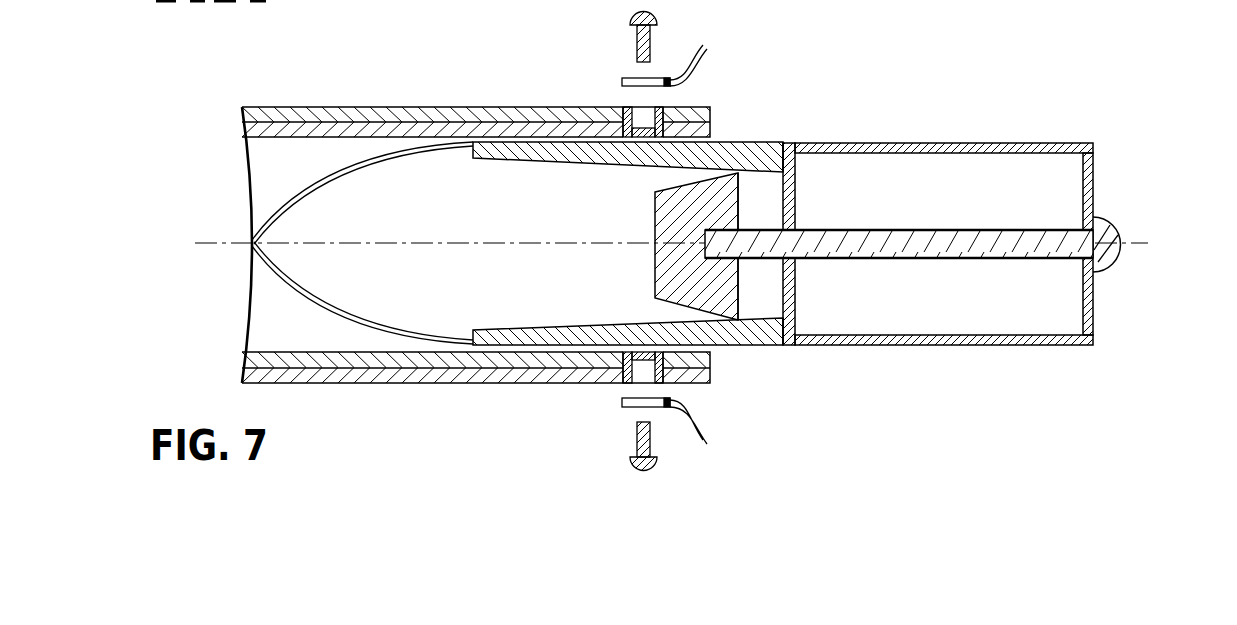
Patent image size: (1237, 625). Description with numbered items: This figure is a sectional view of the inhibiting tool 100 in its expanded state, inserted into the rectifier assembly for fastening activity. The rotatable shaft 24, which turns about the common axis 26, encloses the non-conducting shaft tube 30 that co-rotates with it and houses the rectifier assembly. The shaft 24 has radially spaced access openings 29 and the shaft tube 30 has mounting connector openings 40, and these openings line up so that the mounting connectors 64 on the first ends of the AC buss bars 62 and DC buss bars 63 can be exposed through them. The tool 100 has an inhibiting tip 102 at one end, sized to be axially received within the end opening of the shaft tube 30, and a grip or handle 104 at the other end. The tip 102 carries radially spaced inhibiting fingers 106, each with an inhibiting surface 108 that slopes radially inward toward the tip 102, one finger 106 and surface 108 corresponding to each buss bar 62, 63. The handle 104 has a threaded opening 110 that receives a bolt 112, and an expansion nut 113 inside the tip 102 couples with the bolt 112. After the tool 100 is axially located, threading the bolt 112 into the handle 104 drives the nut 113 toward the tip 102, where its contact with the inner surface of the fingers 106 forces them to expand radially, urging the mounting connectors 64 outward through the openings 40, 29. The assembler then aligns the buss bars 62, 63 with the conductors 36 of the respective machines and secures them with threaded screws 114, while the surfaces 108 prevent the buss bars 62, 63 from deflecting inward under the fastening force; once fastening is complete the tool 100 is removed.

The rotatable shaft 24 is at (476, 221).
The common axis 26 is at (225, 242).
The access openings 29 is at (620, 129).
The shaft tube 30 is at (385, 118).
The conductors 36 is at (690, 63).
The mounting connector openings 40 is at (643, 260).
The AC buss bars 62 is at (305, 192).
The DC buss bars 63 is at (307, 303).
The mounting connectors 64 is at (627, 110).
The inhibiting tool 100 is at (944, 209).
The inhibiting tip 102 is at (619, 250).
The handle 104 is at (1025, 143).
The inhibiting fingers 106 is at (774, 142).
The inhibiting surface 108 is at (728, 143).
The threaded opening 110 is at (943, 183).
The bolt 112 is at (1118, 244).
The expansion nut 113 is at (710, 288).
The threaded screw 114 is at (633, 40).